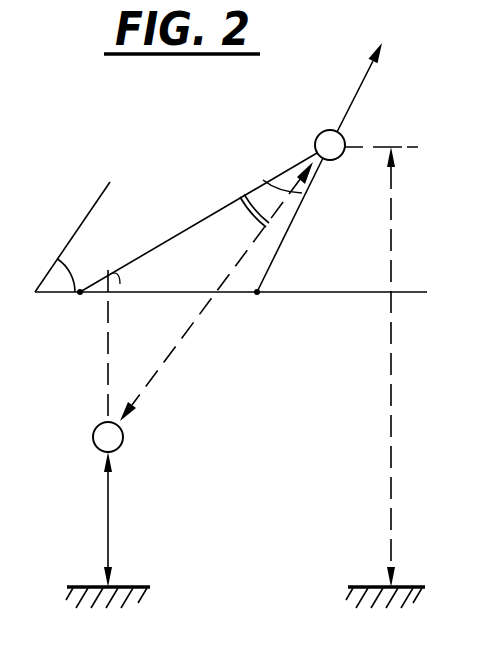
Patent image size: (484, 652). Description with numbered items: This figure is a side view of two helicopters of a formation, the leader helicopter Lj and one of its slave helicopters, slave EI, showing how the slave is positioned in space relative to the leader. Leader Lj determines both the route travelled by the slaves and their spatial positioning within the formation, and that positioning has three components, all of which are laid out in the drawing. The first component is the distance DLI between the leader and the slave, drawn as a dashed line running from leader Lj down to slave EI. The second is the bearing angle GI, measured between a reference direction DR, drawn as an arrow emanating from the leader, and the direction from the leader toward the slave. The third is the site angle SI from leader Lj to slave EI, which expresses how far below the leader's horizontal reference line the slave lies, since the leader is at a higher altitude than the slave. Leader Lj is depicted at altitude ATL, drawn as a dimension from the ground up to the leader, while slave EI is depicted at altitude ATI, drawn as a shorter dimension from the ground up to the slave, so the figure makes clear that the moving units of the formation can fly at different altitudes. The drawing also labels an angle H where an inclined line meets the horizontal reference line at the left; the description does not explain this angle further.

The light source elevation angle H is at (72, 237).
The leader helicopter Lj is at (223, 211).
The reference direction DR is at (378, 87).
The bearing angle GI is at (281, 176).
The site angle SI is at (244, 222).
The distance between leader and slave DLI is at (216, 291).
The slave helicopter EI is at (120, 361).
The altitude of slave ATI is at (109, 530).
The altitude of leader ATL is at (392, 377).